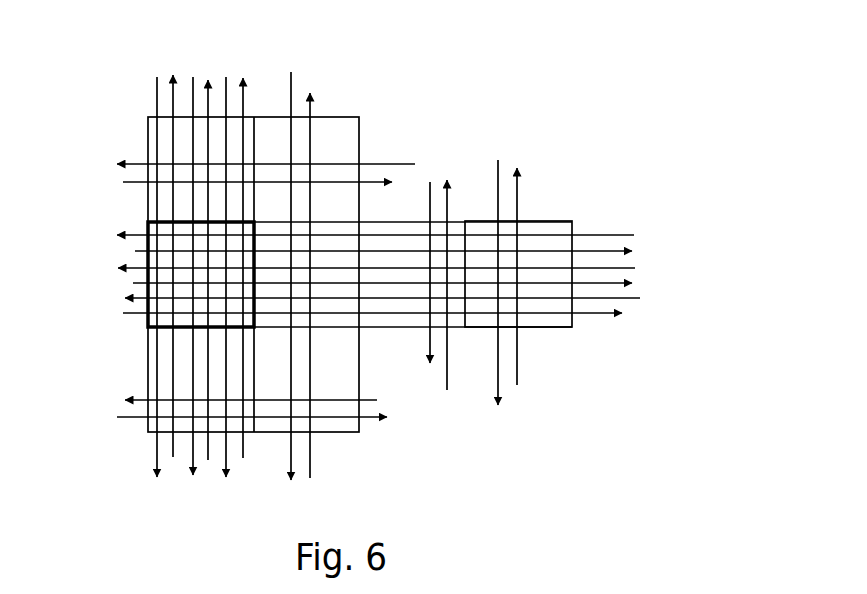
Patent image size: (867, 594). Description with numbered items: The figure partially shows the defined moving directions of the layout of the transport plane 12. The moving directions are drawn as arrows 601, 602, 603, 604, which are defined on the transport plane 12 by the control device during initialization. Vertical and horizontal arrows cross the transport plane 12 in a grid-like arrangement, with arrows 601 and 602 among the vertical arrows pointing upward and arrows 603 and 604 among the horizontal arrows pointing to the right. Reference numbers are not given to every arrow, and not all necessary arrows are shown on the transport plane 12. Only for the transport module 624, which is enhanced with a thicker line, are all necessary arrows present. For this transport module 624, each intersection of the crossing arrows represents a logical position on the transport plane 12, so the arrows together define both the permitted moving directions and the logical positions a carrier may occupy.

The transport plane 12 is at (333, 365).
The arrow 601 is at (245, 103).
The arrow 602 is at (205, 105).
The arrow 603 is at (603, 313).
The arrow 604 is at (634, 235).
The transport module 624 is at (173, 283).